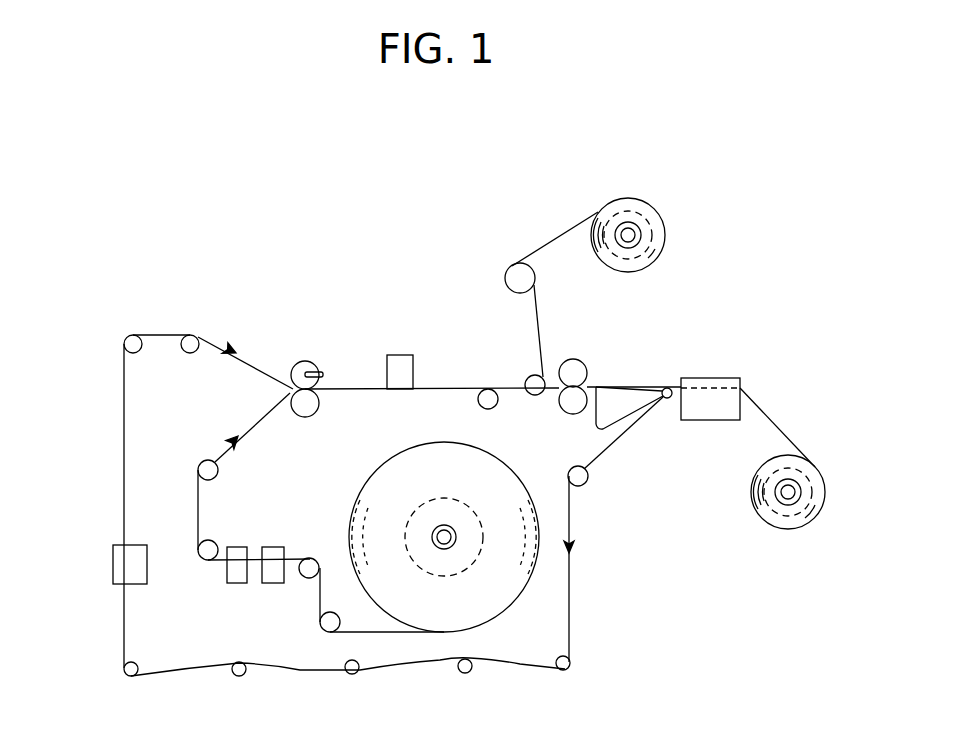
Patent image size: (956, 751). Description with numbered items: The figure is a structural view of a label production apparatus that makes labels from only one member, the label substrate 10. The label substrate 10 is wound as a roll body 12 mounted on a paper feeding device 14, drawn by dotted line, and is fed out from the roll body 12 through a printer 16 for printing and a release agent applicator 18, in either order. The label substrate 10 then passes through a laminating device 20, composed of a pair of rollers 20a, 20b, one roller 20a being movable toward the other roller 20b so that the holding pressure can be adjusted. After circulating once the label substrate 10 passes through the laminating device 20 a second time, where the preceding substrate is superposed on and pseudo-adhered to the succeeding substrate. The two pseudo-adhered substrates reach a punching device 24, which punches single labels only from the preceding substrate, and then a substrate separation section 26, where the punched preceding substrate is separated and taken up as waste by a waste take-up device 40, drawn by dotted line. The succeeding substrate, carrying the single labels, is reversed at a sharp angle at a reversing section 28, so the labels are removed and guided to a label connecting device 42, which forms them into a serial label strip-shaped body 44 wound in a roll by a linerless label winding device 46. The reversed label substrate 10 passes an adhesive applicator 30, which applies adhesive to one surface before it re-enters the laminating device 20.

The label substrate 10 is at (380, 633).
The roll body 12 is at (488, 592).
The paper feeding device 14 is at (477, 517).
The printer 16 is at (273, 576).
The release agent applicator 18 is at (237, 576).
The laminating device 20 is at (289, 371).
The roller 20a is at (305, 372).
The roller 20b is at (305, 412).
The punching device 24 is at (400, 372).
The substrate separation section 26 is at (530, 383).
The reversing section 28 is at (669, 399).
The adhesive applicator 30 is at (130, 567).
The waste take-up device 40 is at (660, 211).
The label connecting device 42 is at (708, 378).
The label strip-shaped body 44 is at (778, 428).
The linerless label winding device 46 is at (764, 524).